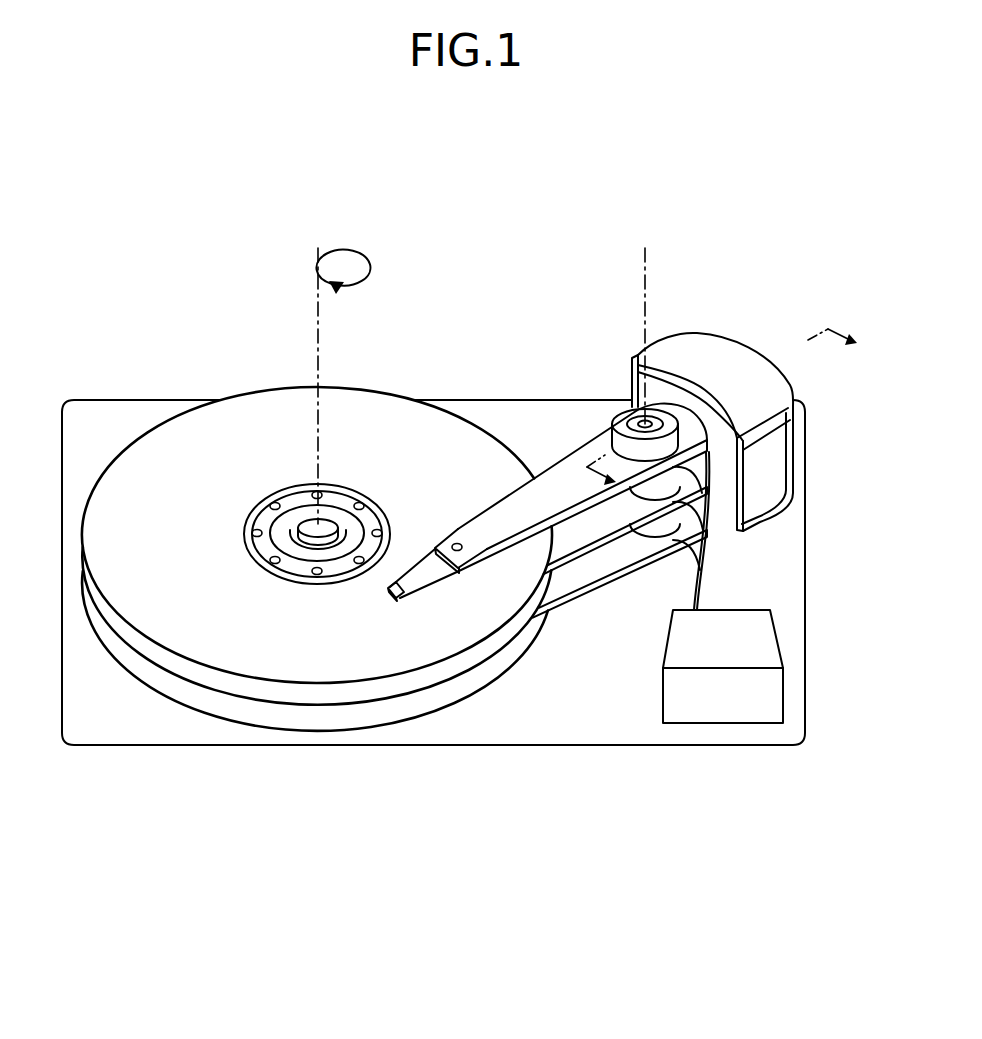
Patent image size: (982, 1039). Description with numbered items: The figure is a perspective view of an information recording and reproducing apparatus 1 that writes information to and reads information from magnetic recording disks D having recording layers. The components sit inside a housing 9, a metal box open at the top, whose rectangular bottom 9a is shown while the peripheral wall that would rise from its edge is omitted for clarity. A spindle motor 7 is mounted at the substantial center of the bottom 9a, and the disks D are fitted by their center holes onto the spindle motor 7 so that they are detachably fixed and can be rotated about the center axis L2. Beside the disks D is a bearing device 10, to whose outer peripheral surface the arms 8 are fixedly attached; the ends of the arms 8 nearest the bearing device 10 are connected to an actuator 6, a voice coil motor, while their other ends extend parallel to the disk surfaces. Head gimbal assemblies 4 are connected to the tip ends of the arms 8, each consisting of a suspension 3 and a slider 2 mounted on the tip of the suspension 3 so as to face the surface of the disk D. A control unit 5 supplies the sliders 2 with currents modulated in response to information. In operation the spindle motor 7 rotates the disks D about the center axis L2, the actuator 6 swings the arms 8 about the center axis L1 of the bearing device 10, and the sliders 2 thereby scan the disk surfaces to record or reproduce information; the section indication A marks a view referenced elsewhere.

The information recording and reproducing apparatus 1 is at (433, 529).
The slider 2 is at (400, 593).
The suspension 3 is at (430, 569).
The head gimbal assembly 4 is at (431, 712).
The control unit 5 is at (732, 695).
The actuator 6 is at (703, 413).
The spindle motor 7 is at (310, 527).
The arm 8 is at (562, 494).
The housing 9 is at (514, 722).
The bottom 9a is at (433, 633).
The bearing device 10 is at (651, 412).
The disk D is at (210, 635).
The center axis of the bearing device L1 is at (645, 314).
The center axis of the disks L2 is at (336, 364).
The section arrow A is at (727, 408).